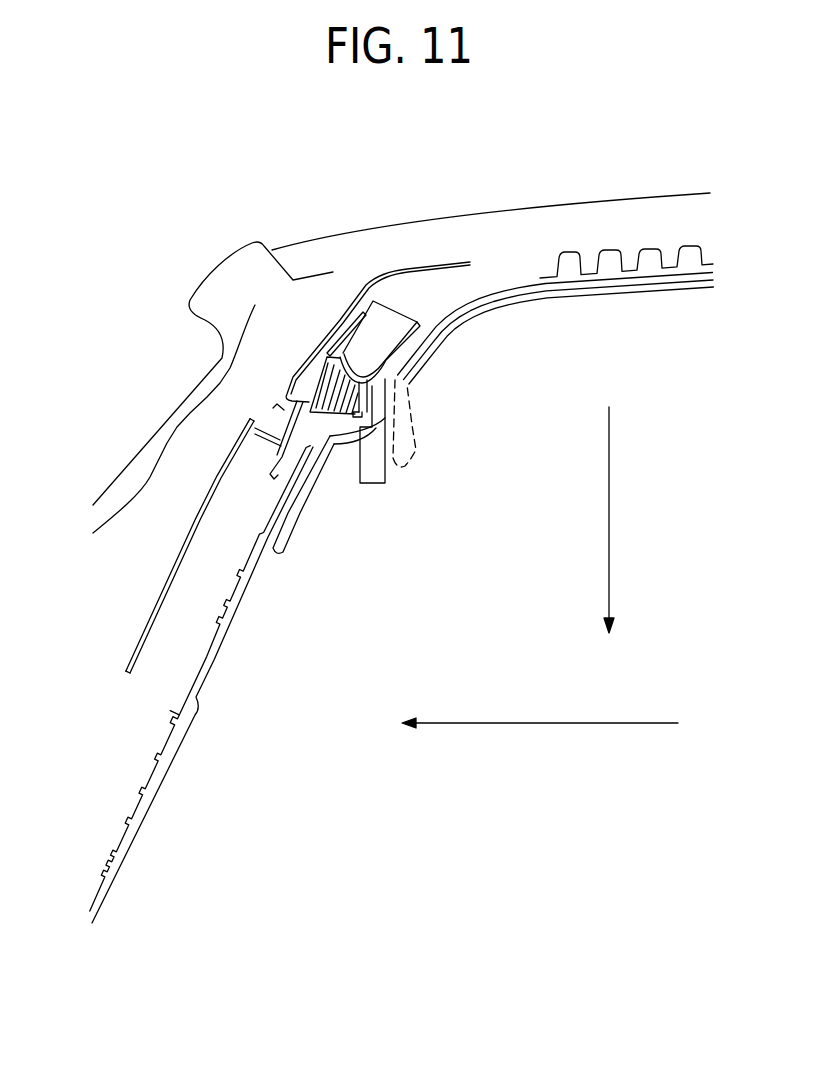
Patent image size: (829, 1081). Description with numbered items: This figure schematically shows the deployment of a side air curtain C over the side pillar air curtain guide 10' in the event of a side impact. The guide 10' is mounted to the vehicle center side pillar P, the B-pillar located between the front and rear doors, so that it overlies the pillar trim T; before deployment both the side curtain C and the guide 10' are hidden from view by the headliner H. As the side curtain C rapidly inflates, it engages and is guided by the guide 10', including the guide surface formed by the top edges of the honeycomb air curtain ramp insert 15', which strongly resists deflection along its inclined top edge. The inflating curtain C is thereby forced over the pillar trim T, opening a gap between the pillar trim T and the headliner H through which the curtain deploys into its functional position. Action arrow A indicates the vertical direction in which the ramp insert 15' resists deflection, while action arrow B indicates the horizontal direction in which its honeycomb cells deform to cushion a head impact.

The side pillar air curtain guide 10' is at (211, 477).
The air curtain ramp insert 15' is at (212, 395).
The headliner H is at (412, 357).
The side air curtain C is at (373, 473).
The pillar trim T is at (296, 513).
The vehicle center side pillar P is at (187, 628).
The action arrow A is at (609, 513).
The action arrow B is at (535, 723).